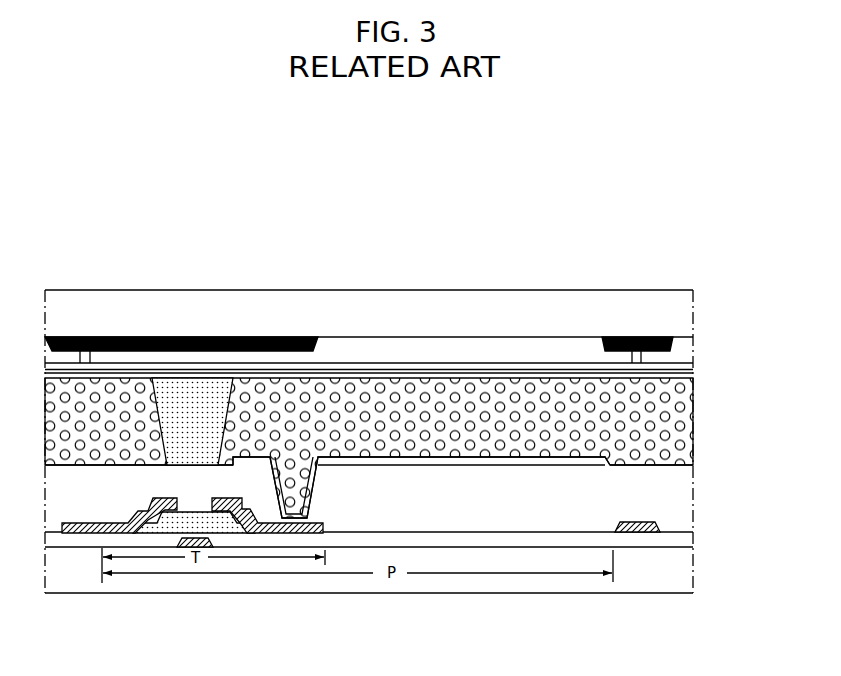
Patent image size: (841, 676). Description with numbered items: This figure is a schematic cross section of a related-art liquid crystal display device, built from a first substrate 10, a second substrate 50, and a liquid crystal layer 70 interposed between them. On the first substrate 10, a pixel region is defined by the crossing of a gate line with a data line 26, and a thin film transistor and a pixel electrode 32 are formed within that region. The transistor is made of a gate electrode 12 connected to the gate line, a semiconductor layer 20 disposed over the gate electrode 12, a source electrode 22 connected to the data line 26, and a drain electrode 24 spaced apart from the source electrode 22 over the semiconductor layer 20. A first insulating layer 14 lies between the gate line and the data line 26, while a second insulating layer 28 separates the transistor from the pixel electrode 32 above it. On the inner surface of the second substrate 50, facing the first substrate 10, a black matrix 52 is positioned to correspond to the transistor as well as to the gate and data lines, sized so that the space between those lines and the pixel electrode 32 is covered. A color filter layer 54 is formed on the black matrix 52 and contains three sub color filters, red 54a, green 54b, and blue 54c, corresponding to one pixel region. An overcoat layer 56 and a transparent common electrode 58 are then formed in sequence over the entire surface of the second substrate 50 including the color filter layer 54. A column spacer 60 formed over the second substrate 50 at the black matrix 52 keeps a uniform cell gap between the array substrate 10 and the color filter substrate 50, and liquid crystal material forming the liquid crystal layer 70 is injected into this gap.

The first substrate 10 is at (82, 578).
The gate electrode 12 is at (183, 548).
The first insulating layer 14 is at (680, 540).
The semiconductor layer 20 is at (245, 533).
The source electrode 22 is at (121, 533).
The drain electrode 24 is at (300, 533).
The data line 26 is at (640, 532).
The second insulating layer 28 is at (673, 485).
The pixel electrode 32 is at (485, 458).
The second substrate 50 is at (102, 323).
The black matrix 52 is at (200, 337).
The color filter layer 54 is at (700, 185).
The red sub color filter 54a is at (64, 356).
The green sub color filter 54b is at (502, 355).
The blue sub color filter 54c is at (684, 343).
The overcoat layer 56 is at (411, 368).
The transparent common electrode 58 is at (560, 375).
The column spacer 60 is at (215, 400).
The liquid crystal layer 70 is at (668, 422).